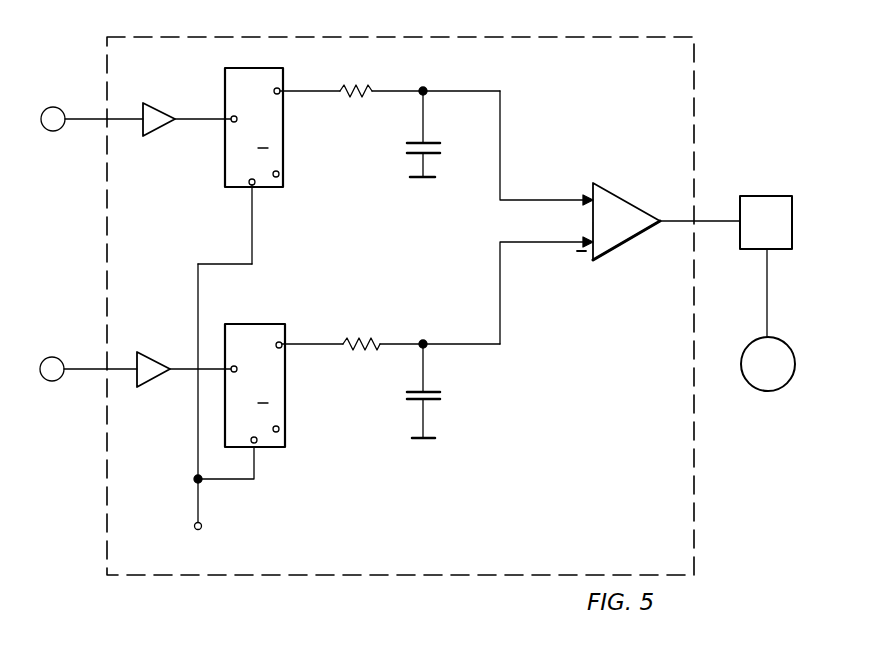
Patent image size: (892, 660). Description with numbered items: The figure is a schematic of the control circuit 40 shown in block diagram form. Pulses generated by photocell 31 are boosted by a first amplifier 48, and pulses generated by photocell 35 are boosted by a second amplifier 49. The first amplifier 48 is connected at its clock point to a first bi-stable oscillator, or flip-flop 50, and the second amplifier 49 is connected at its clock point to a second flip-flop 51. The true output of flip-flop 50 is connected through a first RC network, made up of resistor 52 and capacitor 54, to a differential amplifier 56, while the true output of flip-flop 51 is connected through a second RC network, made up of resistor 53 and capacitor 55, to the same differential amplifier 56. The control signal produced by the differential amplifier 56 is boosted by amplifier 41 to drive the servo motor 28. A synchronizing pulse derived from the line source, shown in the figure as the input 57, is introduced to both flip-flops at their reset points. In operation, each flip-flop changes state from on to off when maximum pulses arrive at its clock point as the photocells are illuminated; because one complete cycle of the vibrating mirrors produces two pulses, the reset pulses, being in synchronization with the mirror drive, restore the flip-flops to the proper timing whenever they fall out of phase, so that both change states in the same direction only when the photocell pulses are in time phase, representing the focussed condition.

The control circuit 40 is at (705, 51).
The photocell 31 is at (43, 111).
The photocell 35 is at (44, 361).
The first amplifier 48 is at (148, 104).
The second amplifier 49 is at (140, 353).
The first bi-stable oscillator (flip-flop) 50 is at (283, 70).
The second flip-flop 51 is at (260, 324).
The resistor 52 is at (368, 82).
The resistor 53 is at (350, 335).
The capacitor 54 is at (428, 143).
The capacitor 55 is at (432, 392).
The differential amplifier 56 is at (610, 200).
The reset terminal 57 is at (234, 536).
The amplifier 41 is at (750, 200).
The servo motor 28 is at (776, 338).